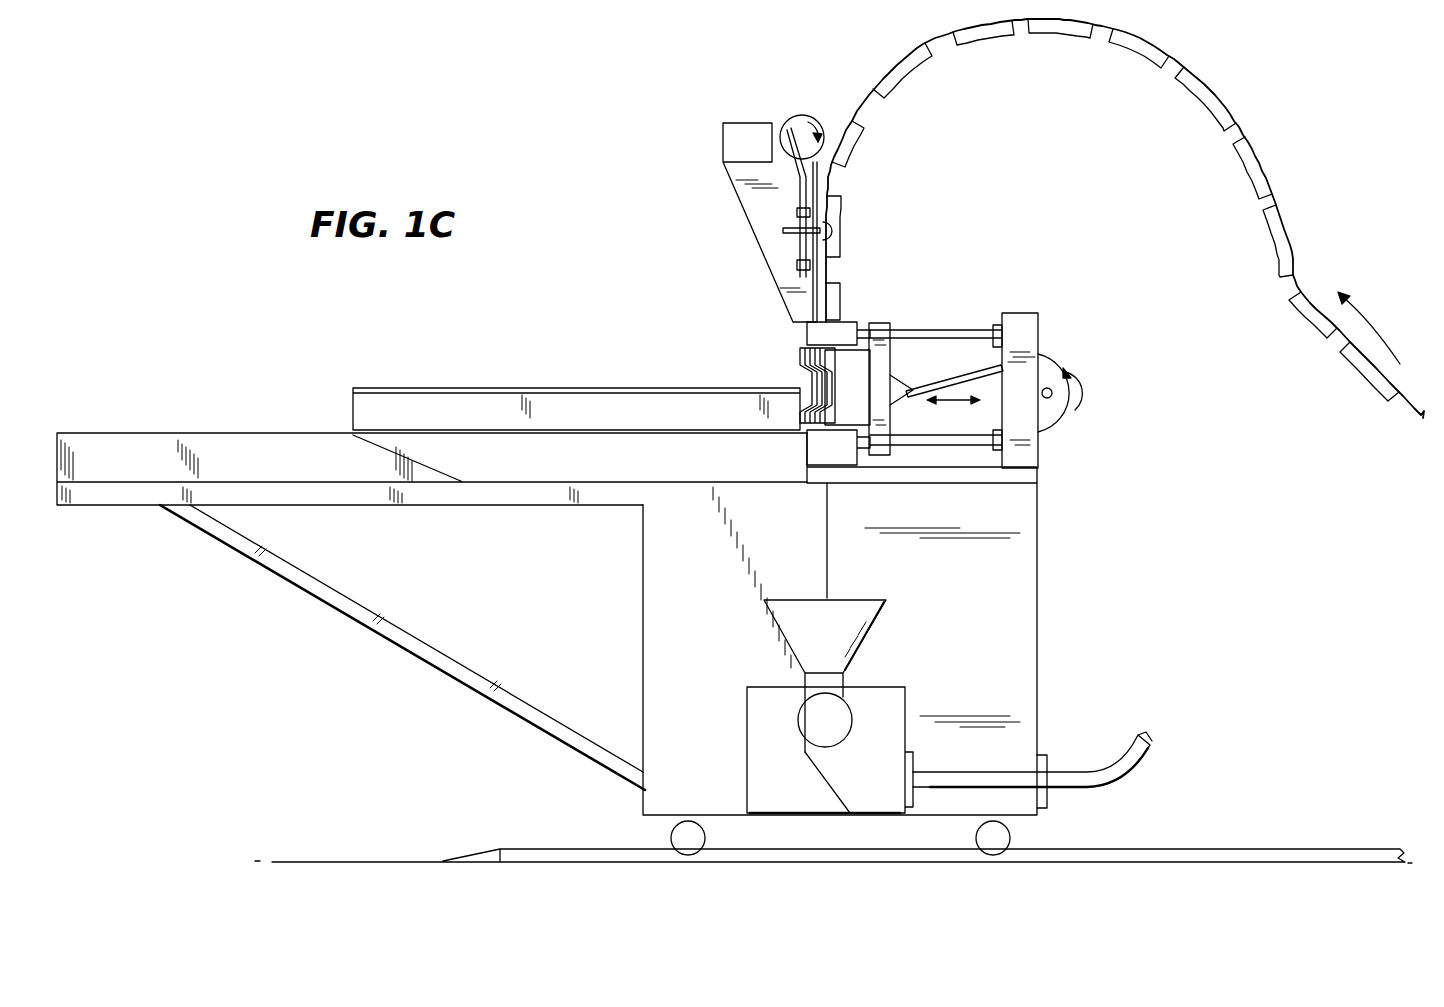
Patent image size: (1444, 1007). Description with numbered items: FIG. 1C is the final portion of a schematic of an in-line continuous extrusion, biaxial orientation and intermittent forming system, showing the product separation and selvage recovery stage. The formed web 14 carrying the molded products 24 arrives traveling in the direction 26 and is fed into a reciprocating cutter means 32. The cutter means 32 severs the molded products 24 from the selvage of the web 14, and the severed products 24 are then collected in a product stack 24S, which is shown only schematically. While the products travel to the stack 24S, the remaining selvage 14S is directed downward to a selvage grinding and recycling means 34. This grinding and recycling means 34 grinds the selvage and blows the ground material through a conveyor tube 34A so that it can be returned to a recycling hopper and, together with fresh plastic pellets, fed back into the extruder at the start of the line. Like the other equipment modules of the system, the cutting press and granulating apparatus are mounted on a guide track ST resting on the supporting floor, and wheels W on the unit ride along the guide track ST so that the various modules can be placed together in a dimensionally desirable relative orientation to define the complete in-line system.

The web 14 is at (1182, 60).
The molded products 24 is at (893, 100).
The product stack 24S is at (799, 341).
The direction of travel 26 is at (1366, 334).
The reciprocating cutter means 32 is at (915, 289).
The selvage 14S is at (829, 530).
The selvage grinding and recycling means 34 is at (896, 682).
The conveyor tube 34A is at (1098, 757).
The wheels W is at (697, 846).
The guide track ST is at (1200, 855).